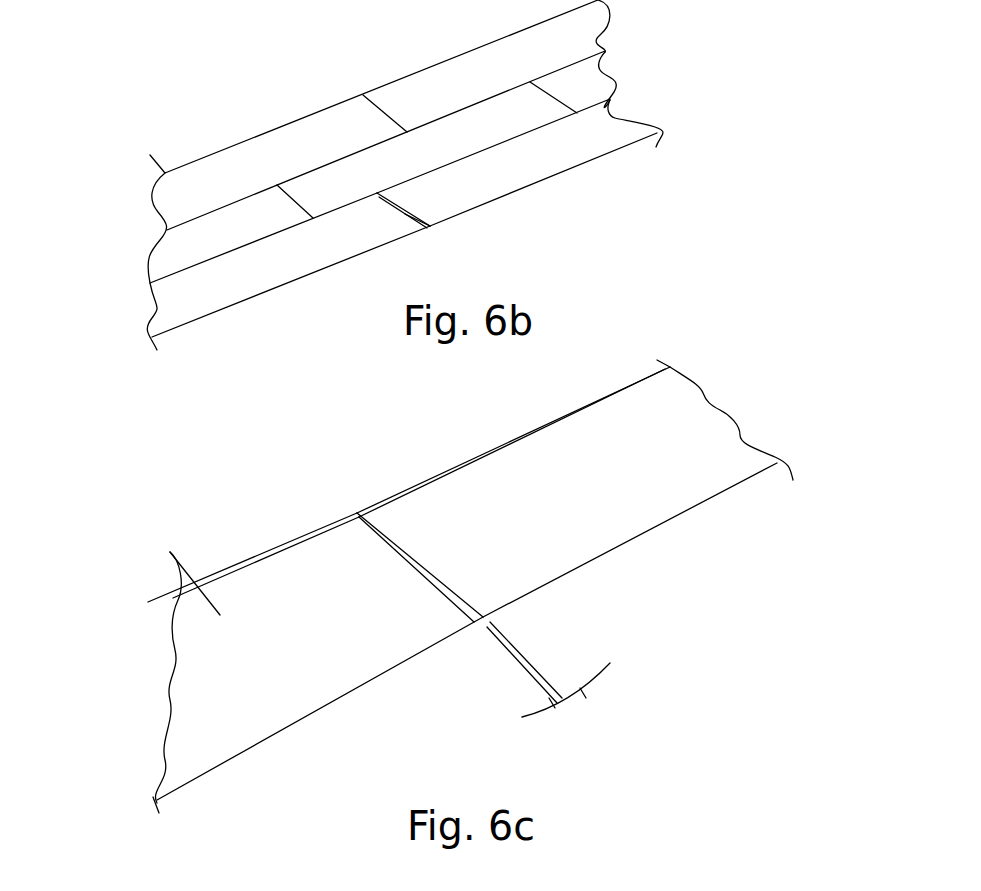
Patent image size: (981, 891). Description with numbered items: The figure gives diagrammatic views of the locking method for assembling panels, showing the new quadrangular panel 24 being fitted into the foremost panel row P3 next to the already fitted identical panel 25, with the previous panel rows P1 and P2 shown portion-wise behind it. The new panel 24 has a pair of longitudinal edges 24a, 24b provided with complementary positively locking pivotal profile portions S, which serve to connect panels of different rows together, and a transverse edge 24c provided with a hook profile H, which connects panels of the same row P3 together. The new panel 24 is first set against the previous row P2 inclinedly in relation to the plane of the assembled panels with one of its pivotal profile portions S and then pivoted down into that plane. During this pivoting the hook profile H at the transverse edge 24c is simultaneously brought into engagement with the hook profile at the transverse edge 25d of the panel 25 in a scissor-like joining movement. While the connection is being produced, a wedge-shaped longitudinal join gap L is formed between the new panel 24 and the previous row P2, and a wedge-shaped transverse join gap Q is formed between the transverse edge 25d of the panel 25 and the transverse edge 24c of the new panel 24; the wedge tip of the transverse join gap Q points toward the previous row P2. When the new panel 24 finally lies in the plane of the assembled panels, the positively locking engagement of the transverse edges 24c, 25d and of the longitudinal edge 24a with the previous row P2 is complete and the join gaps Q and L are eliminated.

In FIG. 6B, the new quadrangular panel 24 is at (588, 148).
In FIG. 6C, the new quadrangular panel 24 is at (707, 497).
In FIG. 6B, the longitudinal edge 24a is at (460, 162).
In FIG. 6B, the longitudinal edge 24b is at (513, 192).
In FIG. 6B, the transverse edge 24c is at (420, 212).
In FIG. 6C, the transverse edge 24c is at (447, 588).
In FIG. 6B, the identical panel 25 is at (233, 293).
In FIG. 6C, the identical panel 25 is at (228, 757).
In FIG. 6B, the transverse edge 25d is at (410, 232).
In FIG. 6C, the transverse edge 25d is at (450, 605).
In FIG. 6B, the pivotal profile portions S is at (527, 132).
In FIG. 6C, the pivotal profile portions S is at (644, 386).
In FIG. 6B, the hook profiles H is at (375, 207).
In FIG. 6C, the hook profiles H is at (377, 557).
In FIG. 6C, the longitudinal join gap L is at (200, 585).
In FIG. 6C, the transverse join gap Q is at (566, 690).
In FIG. 6B, the panel row P1 is at (137, 212).
In FIG. 6B, the previous panel row P2 is at (137, 265).
In FIG. 6B, the foremost panel row P3 is at (143, 314).